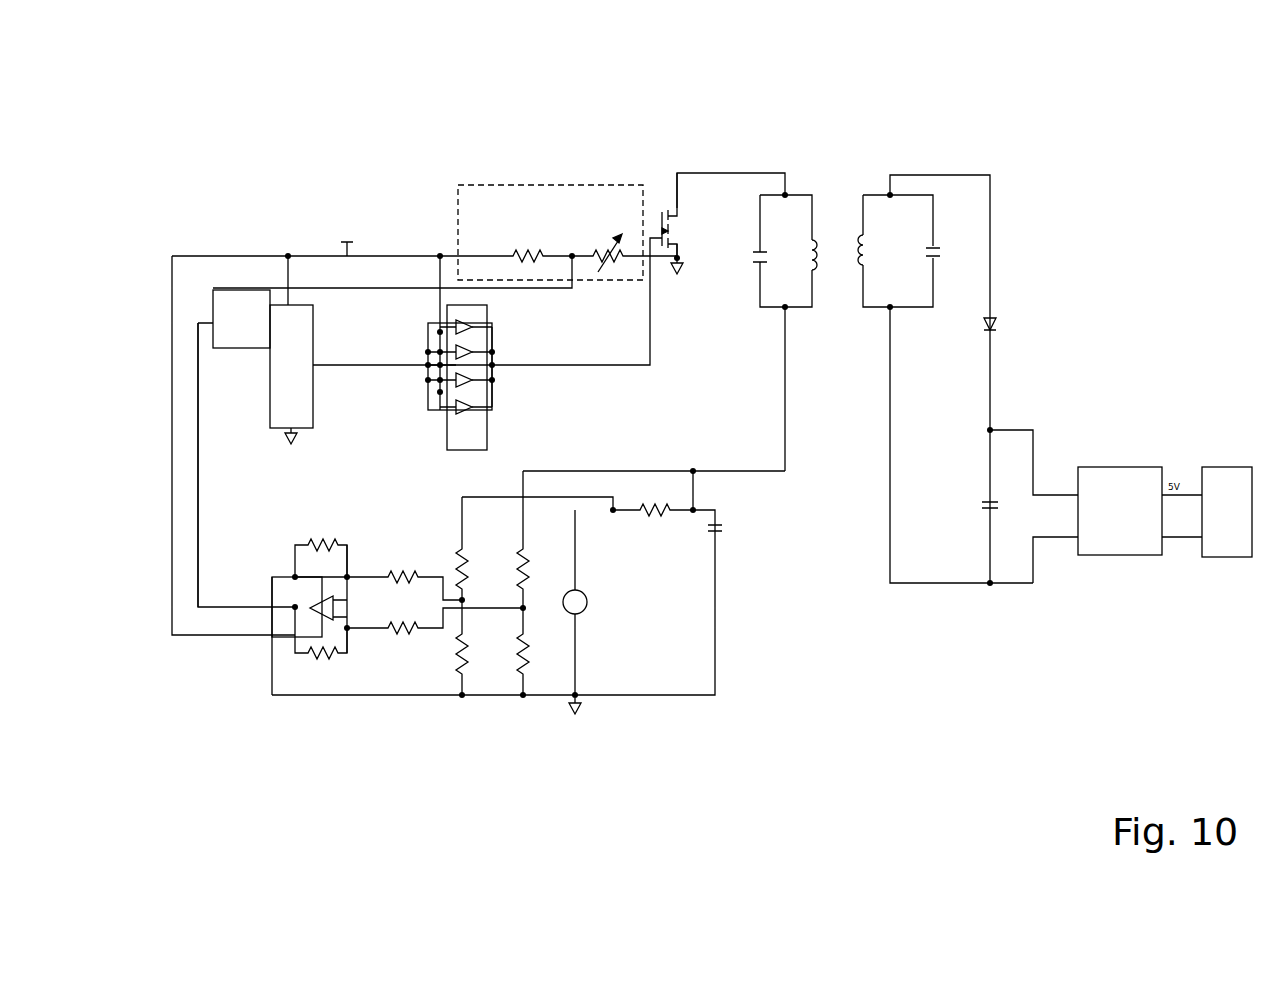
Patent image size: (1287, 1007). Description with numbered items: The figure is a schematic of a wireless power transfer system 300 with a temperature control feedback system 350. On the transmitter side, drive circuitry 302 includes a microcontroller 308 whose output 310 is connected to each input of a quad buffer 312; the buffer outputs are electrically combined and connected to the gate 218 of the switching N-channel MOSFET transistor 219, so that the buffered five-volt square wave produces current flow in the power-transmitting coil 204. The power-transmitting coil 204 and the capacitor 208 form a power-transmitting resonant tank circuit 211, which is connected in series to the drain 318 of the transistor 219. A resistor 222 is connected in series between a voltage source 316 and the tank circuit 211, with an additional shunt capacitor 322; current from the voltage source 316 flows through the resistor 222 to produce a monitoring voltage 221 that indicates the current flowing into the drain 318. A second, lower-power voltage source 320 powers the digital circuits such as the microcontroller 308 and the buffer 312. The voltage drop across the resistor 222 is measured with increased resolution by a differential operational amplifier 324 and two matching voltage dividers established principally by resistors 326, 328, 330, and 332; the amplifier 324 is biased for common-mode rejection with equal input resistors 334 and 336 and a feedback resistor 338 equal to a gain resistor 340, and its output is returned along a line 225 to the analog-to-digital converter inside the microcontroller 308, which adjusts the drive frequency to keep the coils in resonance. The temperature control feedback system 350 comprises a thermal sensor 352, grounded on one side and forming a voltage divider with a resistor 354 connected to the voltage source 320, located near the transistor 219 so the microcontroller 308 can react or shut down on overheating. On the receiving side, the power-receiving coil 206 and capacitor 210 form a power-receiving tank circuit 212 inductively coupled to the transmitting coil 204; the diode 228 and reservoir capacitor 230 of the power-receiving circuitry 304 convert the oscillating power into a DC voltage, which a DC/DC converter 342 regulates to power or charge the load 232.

The wireless power transfer system 300 is at (740, 65).
The drive circuitry 302 is at (730, 752).
The power-receiving circuitry 304 is at (1188, 628).
The power-transmitting resonant tank circuit 211 is at (823, 148).
The power-receiving tank circuit 212 is at (942, 148).
The drain 318 is at (678, 192).
The N-channel MOSFET transistor 219 is at (667, 208).
The gate 218 is at (670, 262).
The temperature control feedback system 350 is at (530, 185).
The thermal sensor 352 is at (628, 240).
The resistor 354 is at (548, 246).
The power-transmitting coil 204 is at (806, 252).
The capacitor 208 is at (755, 257).
The power-receiving coil 206 is at (876, 252).
The capacitor 210 is at (938, 256).
The diode 228 is at (998, 320).
The reservoir capacitor 230 is at (986, 504).
The DC/DC converter 342 is at (1145, 467).
The load 232 is at (1245, 467).
The voltage source 320 is at (352, 242).
The microcontroller 308 is at (305, 340).
The output 310 is at (313, 365).
The quad buffer 312 is at (487, 432).
The feedback line 225 is at (200, 472).
The differential operational amplifier 324 is at (312, 620).
The gain resistor 340 is at (340, 547).
The feedback resistor 338 is at (302, 657).
The input resistor 334 is at (398, 570).
The input resistor 336 is at (392, 645).
The resistor 326 is at (468, 565).
The resistor 330 is at (530, 565).
The resistor 328 is at (474, 660).
The resistor 332 is at (530, 647).
The voltage source 316 is at (588, 598).
The shunt capacitor 322 is at (724, 528).
The monitoring voltage 221 is at (640, 522).
The resistor 222 is at (644, 548).